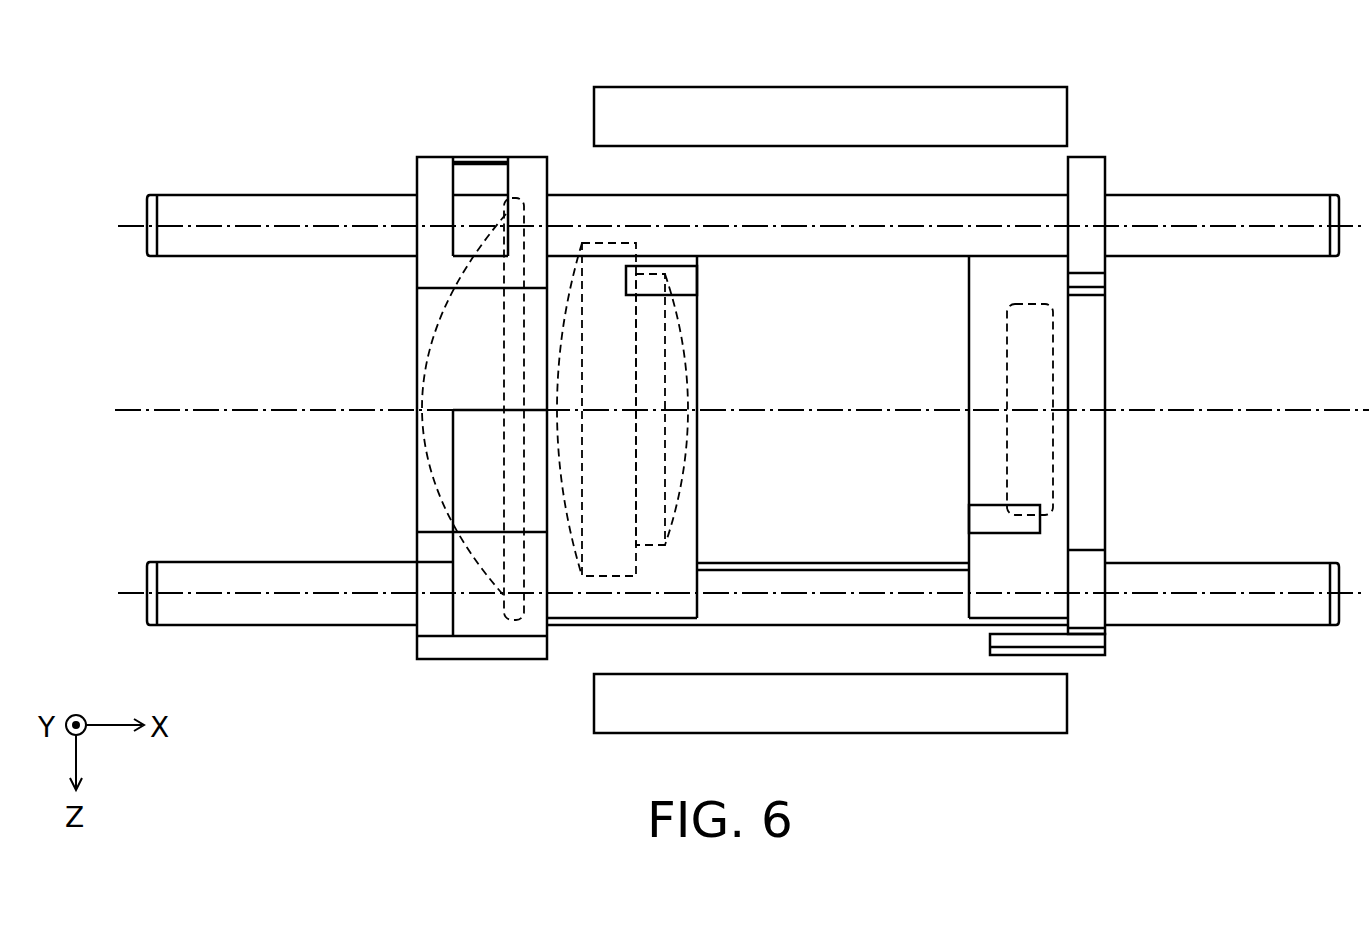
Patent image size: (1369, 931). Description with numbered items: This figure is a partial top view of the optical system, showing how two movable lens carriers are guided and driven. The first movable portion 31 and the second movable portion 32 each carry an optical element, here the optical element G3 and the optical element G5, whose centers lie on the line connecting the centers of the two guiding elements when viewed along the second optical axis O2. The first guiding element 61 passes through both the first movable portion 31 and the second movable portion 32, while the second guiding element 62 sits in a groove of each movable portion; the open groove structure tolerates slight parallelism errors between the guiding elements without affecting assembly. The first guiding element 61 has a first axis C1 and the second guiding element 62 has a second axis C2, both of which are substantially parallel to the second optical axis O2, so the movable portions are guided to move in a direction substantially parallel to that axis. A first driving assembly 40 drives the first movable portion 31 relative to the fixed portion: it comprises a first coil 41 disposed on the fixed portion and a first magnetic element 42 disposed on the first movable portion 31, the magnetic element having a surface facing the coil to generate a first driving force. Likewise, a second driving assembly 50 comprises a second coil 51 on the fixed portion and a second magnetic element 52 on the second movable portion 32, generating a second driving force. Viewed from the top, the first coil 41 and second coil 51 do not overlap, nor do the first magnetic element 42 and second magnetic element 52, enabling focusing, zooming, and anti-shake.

The first movable portion 31 is at (417, 320).
The second movable portion 32 is at (1097, 349).
The first driving assembly 40 is at (942, 378).
The first coil 41 is at (927, 123).
The first magnetic element 42 is at (687, 282).
The second driving assembly 50 is at (942, 759).
The second coil 51 is at (999, 708).
The second magnetic element 52 is at (985, 522).
The first guiding element 61 is at (868, 240).
The second guiding element 62 is at (831, 578).
The optical element G3 is at (445, 375).
The optical element G5 is at (1017, 440).
The first axis C1 is at (720, 227).
The second axis C2 is at (720, 595).
The second optical axis O2 is at (718, 411).